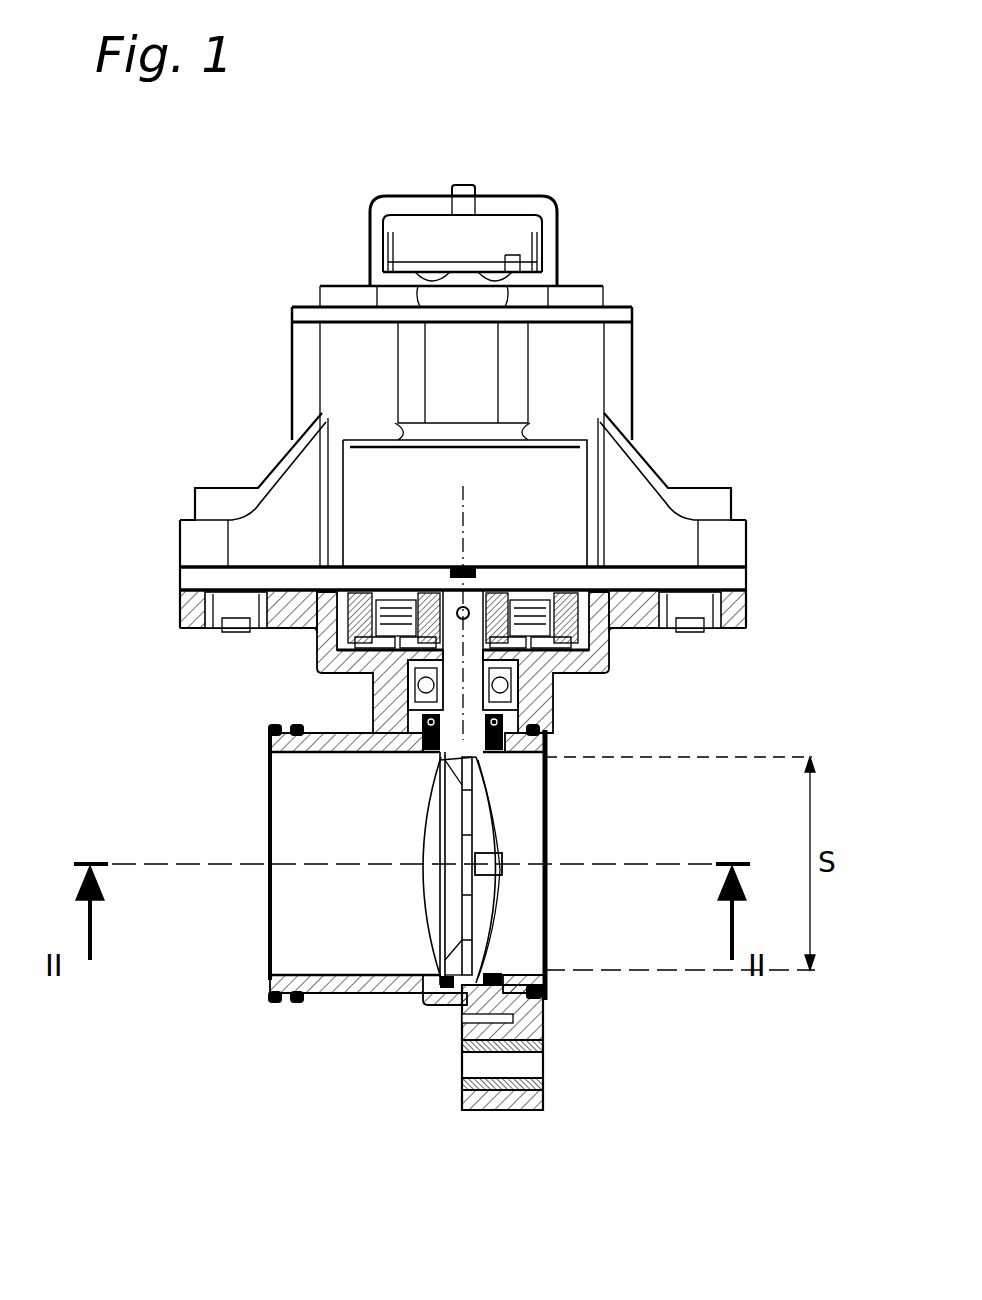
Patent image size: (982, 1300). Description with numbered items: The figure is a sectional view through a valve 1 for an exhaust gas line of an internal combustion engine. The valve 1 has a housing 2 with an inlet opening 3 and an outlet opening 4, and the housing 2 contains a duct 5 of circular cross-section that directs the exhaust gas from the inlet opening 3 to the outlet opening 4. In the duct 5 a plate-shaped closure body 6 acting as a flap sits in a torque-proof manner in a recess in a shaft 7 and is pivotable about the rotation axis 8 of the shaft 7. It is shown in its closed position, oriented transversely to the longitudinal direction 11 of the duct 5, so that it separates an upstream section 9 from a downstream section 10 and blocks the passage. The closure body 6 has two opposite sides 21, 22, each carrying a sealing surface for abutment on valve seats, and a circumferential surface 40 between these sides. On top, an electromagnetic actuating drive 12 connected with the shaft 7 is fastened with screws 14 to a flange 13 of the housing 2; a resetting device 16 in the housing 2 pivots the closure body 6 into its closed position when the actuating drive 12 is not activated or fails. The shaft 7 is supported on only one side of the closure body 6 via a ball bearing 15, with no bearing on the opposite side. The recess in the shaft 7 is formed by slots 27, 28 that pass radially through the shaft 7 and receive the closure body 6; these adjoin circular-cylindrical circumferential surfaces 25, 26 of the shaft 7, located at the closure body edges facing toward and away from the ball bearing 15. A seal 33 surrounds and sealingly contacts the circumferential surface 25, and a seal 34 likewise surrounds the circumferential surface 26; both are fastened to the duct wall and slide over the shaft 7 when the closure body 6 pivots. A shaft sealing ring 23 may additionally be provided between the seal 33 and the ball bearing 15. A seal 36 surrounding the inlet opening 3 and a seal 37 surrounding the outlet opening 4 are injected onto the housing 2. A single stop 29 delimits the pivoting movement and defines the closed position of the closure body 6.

The valve 1 is at (686, 275).
The housing 2 is at (575, 668).
The inlet opening 3 is at (266, 805).
The outlet opening 4 is at (554, 805).
The duct 5 is at (336, 1000).
The closure body 6 is at (548, 841).
The shaft 7 is at (556, 693).
The rotation axis 8 is at (466, 492).
The upstream section 9 is at (296, 907).
The downstream section 10 is at (678, 760).
The longitudinal direction 11 is at (632, 864).
The electromagnetic actuating drive 12 is at (612, 366).
The flange 13 is at (744, 600).
The screws 14 is at (209, 507).
The ball bearing 15 is at (420, 703).
The resetting device 16 is at (586, 638).
The side / sealing surface 21 is at (460, 843).
The side / sealing surface 22 is at (483, 892).
The shaft sealing ring 23 is at (422, 717).
The circular-cylindrical circumferential surface 25 is at (442, 770).
The circular-cylindrical circumferential surface 26 is at (452, 978).
The slot 27 is at (453, 822).
The slot 28 is at (463, 1000).
The stop 29 is at (486, 880).
The seal 33 is at (436, 772).
The seal 34 is at (422, 1004).
The seal 36 is at (278, 1006).
The seal 37 is at (552, 998).
The circumferential surface 40 is at (552, 731).